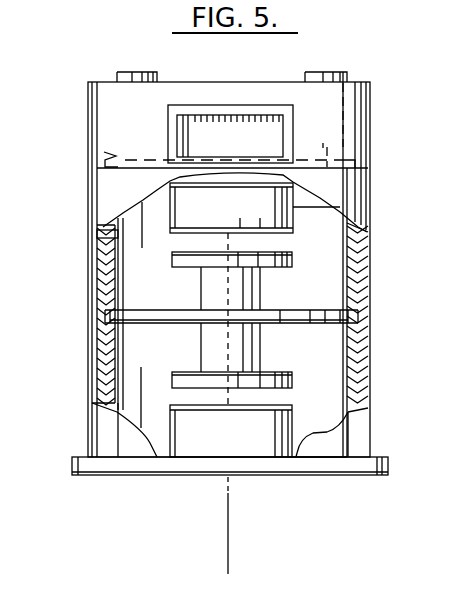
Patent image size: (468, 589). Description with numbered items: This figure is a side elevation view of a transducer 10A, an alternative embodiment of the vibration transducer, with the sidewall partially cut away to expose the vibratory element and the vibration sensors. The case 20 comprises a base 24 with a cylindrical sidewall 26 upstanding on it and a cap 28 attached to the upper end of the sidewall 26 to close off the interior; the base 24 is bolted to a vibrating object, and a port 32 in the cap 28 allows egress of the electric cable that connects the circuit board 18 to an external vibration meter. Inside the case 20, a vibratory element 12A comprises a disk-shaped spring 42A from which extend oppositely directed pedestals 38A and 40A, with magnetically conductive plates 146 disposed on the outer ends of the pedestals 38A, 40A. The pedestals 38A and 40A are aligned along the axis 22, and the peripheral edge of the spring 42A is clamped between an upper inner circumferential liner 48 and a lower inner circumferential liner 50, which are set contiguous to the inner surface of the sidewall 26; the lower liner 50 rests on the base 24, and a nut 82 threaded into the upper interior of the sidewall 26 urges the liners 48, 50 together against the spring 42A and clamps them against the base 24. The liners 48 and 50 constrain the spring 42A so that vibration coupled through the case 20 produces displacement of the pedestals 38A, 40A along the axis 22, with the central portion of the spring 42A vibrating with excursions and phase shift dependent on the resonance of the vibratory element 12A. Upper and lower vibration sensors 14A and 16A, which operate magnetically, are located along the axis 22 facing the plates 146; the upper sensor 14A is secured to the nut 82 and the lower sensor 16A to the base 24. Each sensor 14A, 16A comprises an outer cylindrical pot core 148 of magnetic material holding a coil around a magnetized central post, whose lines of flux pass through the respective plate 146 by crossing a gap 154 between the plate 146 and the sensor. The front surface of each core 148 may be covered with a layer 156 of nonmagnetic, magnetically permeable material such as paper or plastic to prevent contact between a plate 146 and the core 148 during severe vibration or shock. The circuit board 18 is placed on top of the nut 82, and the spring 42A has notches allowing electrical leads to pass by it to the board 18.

The transducer 10A is at (374, 128).
The vibratory element 12A is at (268, 285).
The upper vibration sensor 14A is at (340, 207).
The lower vibration sensor 16A is at (296, 427).
The circuit board 18 is at (98, 149).
The case 20 is at (373, 192).
The axis 22 is at (228, 515).
The base 24 is at (108, 477).
The cylindrical sidewall 26 is at (370, 257).
The cap 28 is at (90, 115).
The port 32 is at (293, 118).
The pedestal 38A is at (199, 292).
The pedestal 40A is at (200, 334).
The spring 42A is at (270, 322).
The upper inner circumferential liner 48 is at (118, 290).
The lower inner circumferential liner 50 is at (118, 357).
The nut 82 is at (180, 178).
The magnetically conductive plate 146 is at (170, 258).
The pot core 148 is at (170, 428).
The gap 154 is at (175, 246).
The layer 156 is at (203, 227).